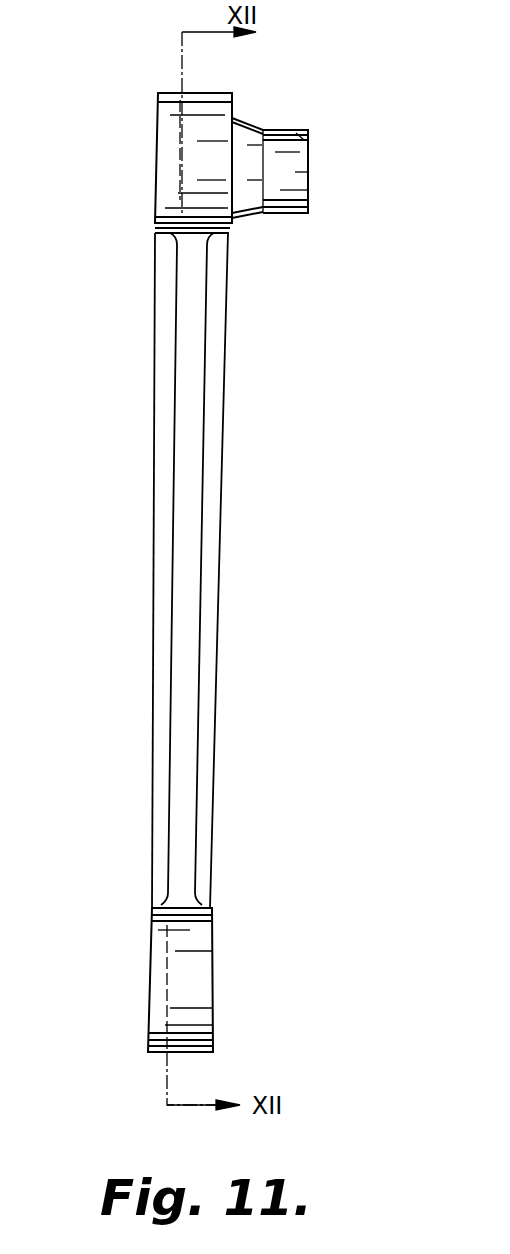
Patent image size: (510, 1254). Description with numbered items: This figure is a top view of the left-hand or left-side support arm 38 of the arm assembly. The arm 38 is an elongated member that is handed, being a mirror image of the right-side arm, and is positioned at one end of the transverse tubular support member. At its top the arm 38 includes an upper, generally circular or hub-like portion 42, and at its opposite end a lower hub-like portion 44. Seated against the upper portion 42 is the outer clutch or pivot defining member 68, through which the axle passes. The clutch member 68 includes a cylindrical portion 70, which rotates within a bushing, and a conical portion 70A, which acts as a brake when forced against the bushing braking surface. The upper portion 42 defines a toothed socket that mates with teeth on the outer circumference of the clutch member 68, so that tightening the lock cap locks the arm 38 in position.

The support arm 38 is at (132, 533).
The upper hub-like portion 42 is at (165, 151).
The lower hub-like portion 44 is at (198, 927).
The outer clutch 68 is at (294, 93).
The cylindrical portion 70 is at (308, 128).
The conical portion 70A is at (243, 188).